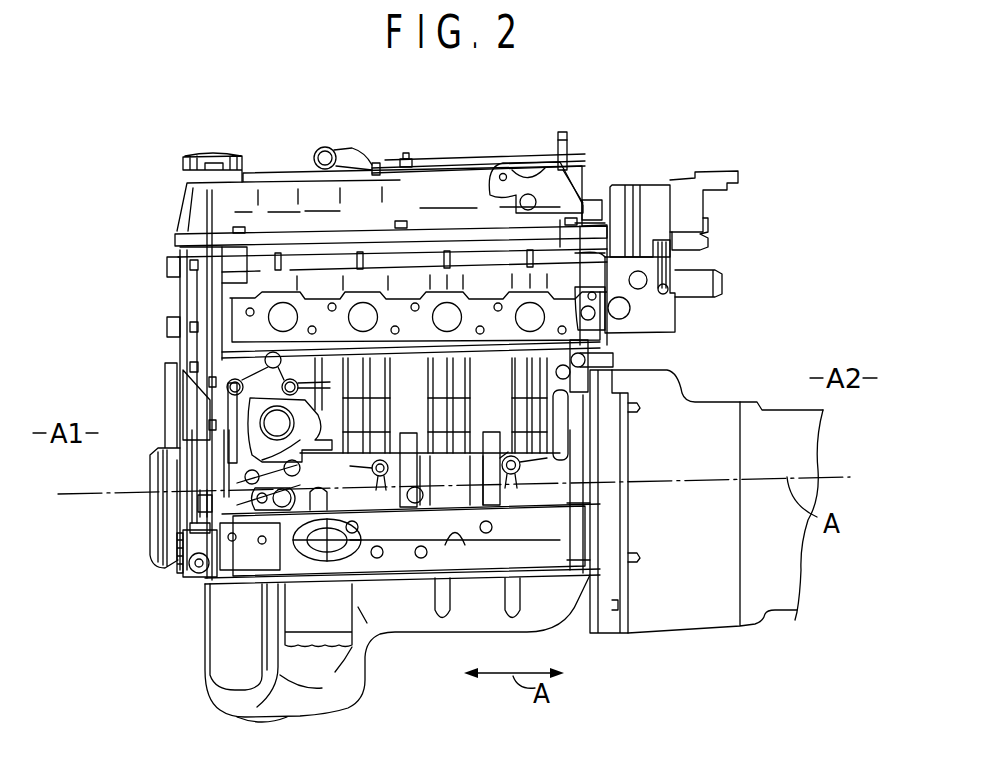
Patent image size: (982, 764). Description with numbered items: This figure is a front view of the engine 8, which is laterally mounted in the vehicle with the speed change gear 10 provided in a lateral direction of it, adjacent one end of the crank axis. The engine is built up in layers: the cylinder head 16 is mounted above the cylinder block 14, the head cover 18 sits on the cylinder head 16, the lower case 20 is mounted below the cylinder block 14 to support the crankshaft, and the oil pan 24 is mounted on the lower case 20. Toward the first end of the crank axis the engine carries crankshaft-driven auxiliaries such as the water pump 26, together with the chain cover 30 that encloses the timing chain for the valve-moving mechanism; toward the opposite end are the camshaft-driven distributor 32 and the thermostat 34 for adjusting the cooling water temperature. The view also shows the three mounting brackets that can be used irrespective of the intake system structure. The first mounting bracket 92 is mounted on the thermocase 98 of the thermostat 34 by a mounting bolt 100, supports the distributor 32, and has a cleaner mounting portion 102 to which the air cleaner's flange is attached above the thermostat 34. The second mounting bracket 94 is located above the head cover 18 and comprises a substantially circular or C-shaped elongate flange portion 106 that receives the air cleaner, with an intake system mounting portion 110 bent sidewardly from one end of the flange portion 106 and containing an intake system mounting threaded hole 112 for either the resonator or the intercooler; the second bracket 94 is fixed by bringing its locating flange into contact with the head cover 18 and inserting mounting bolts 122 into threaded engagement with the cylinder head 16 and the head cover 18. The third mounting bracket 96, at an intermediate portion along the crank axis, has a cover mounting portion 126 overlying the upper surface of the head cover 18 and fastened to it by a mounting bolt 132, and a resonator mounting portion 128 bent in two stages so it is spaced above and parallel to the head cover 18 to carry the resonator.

The engine 8 is at (150, 219).
The speed change gear 10 is at (713, 417).
The cylinder block 14 is at (205, 511).
The cylinder head 16 is at (273, 287).
The head cover 18 is at (212, 212).
The lower case 20 is at (280, 537).
The oil pan 24 is at (213, 635).
The water pump 26 is at (238, 433).
The chain cover 30 is at (193, 350).
The distributor 32 is at (650, 192).
The thermostat 34 is at (680, 333).
The first mounting bracket 92 is at (708, 215).
The second mounting bracket 94 is at (575, 124).
The third mounting bracket 96 is at (388, 142).
The thermocase 98 is at (642, 320).
The mounting bolt 100 is at (697, 263).
The cleaner mounting portion 102 is at (713, 167).
The flange portion 106 is at (567, 140).
The intake system mounting portion 110 is at (497, 168).
The intake system mounting threaded hole 112 is at (505, 172).
The mounting bolts 122 is at (530, 193).
The cover mounting portion 126 is at (377, 163).
The resonator mounting portion 128 is at (325, 147).
The mounting bolt 132 is at (407, 158).